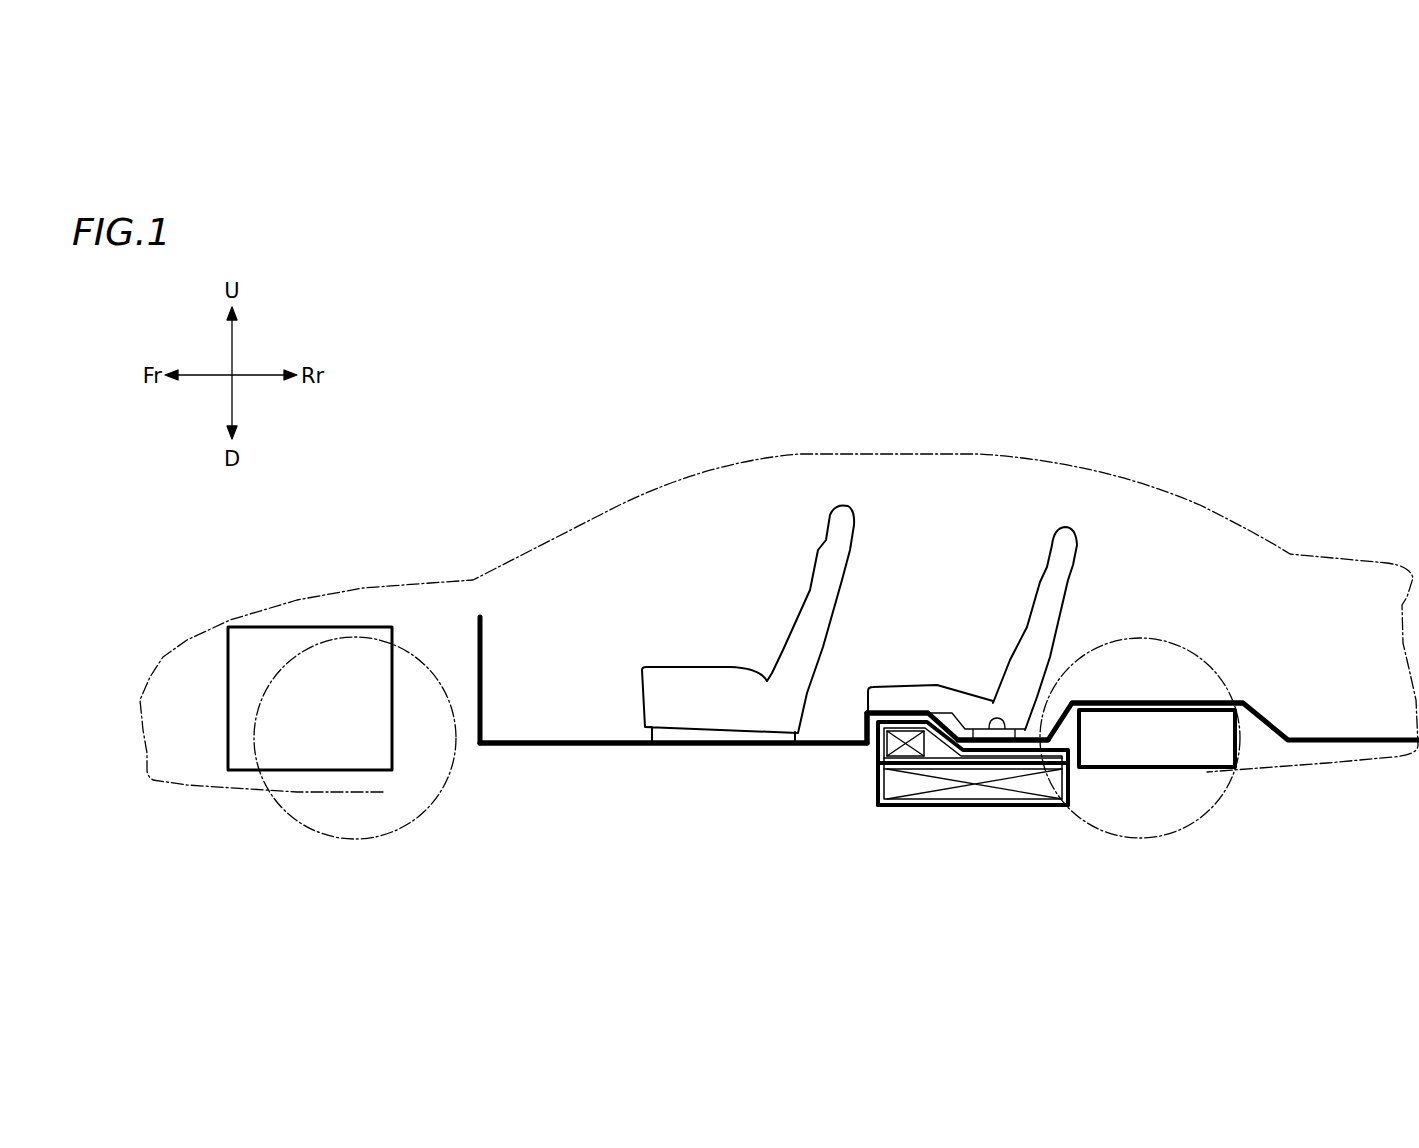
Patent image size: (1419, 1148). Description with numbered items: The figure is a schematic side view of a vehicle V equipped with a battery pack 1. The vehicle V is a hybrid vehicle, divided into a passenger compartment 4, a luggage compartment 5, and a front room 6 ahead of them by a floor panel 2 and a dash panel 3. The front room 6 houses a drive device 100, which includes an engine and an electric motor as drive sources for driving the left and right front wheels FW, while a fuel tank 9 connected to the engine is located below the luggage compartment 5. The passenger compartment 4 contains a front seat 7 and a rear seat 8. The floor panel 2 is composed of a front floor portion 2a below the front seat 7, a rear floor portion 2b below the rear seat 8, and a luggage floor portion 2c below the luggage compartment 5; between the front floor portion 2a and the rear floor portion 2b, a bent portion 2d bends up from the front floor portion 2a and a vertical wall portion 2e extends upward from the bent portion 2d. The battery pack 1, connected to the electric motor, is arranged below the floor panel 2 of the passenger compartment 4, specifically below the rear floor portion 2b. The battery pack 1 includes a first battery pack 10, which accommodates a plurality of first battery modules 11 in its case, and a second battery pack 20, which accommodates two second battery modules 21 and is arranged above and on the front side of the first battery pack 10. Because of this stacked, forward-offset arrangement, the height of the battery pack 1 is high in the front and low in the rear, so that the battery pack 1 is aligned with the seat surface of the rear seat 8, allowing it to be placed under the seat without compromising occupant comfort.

The vehicle V is at (980, 390).
The front wheels FW is at (440, 798).
The drive device 100 is at (298, 640).
The front room 6 is at (206, 685).
The passenger compartment 4 is at (908, 509).
The luggage compartment 5 is at (1217, 589).
The floor panel 2 is at (828, 738).
The front floor portion 2a is at (558, 741).
The rear floor portion 2b is at (1003, 738).
The luggage floor portion 2c is at (1167, 701).
The bent portion 2d is at (868, 748).
The vertical wall portion 2e is at (871, 711).
The dash panel 3 is at (484, 650).
The front seat 7 is at (785, 608).
The rear seat 8 is at (1018, 611).
The fuel tank 9 is at (1145, 768).
The battery pack 1 is at (930, 765).
The first battery pack 10 is at (940, 809).
The first battery modules 11 is at (903, 785).
The second battery pack 20 is at (928, 710).
The second battery modules 21 is at (923, 707).